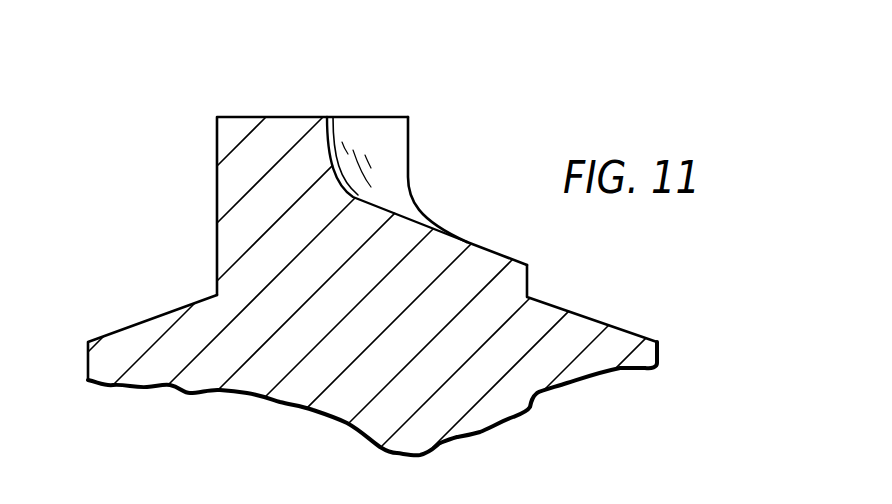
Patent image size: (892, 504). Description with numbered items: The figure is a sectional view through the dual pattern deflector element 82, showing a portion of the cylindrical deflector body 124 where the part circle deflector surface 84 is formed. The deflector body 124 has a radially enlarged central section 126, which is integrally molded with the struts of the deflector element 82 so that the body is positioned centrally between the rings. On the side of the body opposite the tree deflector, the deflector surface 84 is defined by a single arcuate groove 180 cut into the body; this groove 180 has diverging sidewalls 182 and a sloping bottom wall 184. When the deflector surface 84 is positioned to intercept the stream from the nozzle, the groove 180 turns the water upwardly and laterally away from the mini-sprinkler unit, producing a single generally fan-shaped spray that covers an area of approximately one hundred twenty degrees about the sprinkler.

The dual pattern deflector element 82 is at (197, 292).
The deflector surface 84 is at (278, 118).
The cylindrical deflector body 124 is at (519, 287).
The radially enlarged central section 126 is at (617, 342).
The arcuate groove 180 is at (430, 158).
The diverging sidewalls 182 is at (333, 155).
The sloping bottom wall 184 is at (399, 202).